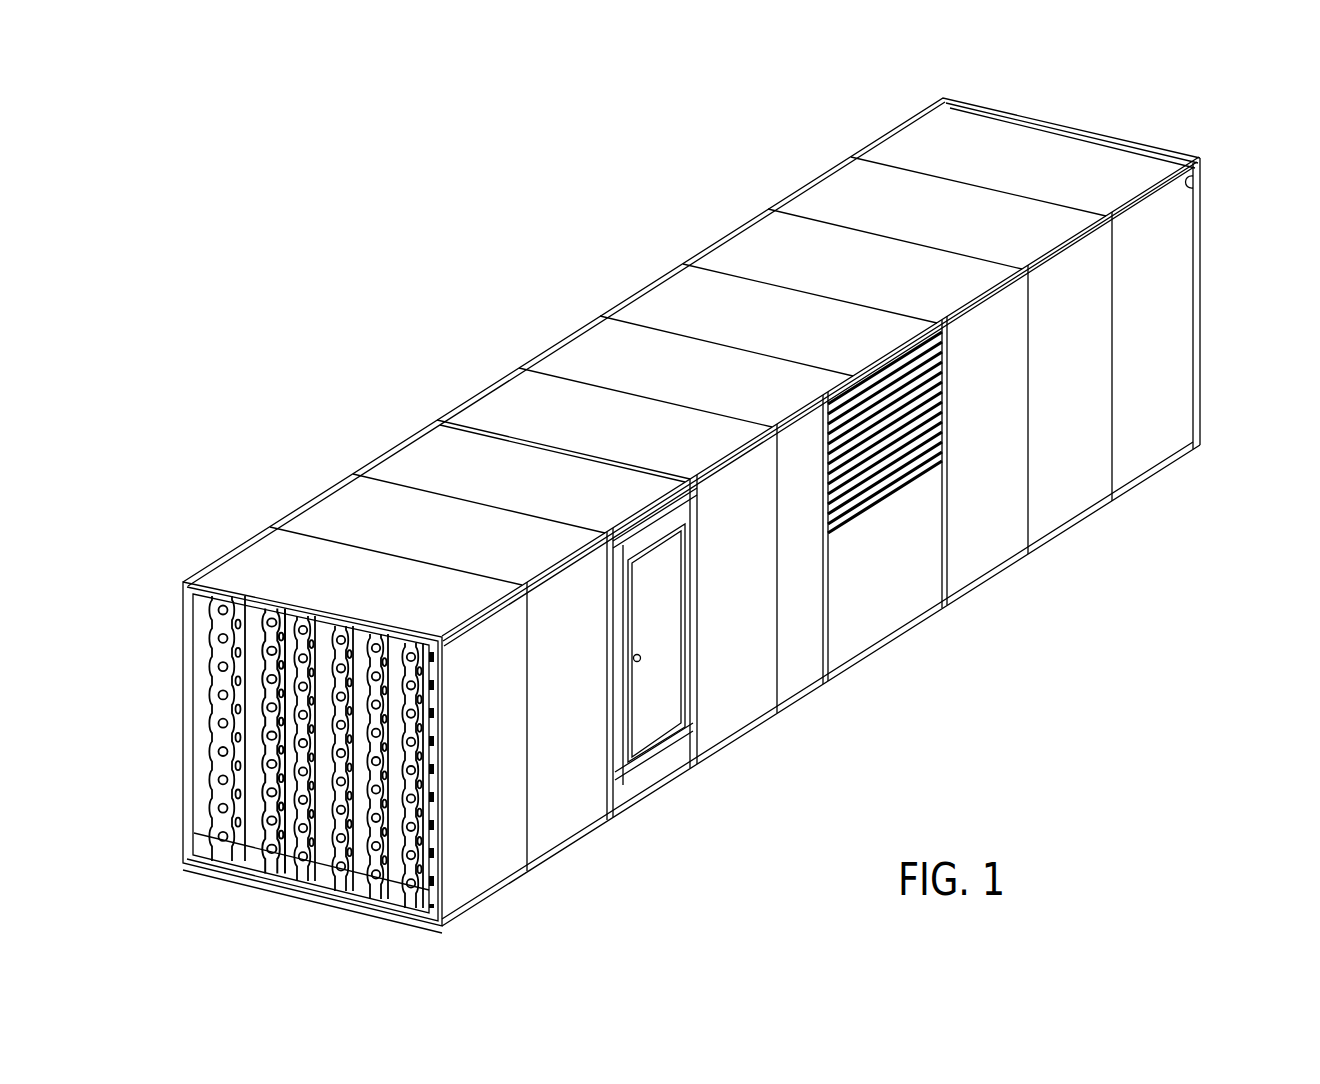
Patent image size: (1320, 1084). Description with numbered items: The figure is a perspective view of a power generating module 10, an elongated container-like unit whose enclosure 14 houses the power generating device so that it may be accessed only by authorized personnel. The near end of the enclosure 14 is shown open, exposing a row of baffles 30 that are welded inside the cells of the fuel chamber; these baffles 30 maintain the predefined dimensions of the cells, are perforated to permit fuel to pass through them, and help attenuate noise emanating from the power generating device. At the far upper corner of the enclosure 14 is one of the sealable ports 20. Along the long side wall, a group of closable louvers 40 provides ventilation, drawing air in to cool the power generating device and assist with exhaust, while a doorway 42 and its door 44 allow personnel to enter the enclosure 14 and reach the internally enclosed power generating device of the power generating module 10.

The power generating module 10 is at (372, 194).
The enclosure 14 is at (721, 219).
The sealable port 20 is at (1196, 180).
The baffles 30 is at (220, 828).
The louvers 40 is at (907, 437).
The doorway 42 is at (657, 762).
The door 44 is at (677, 643).